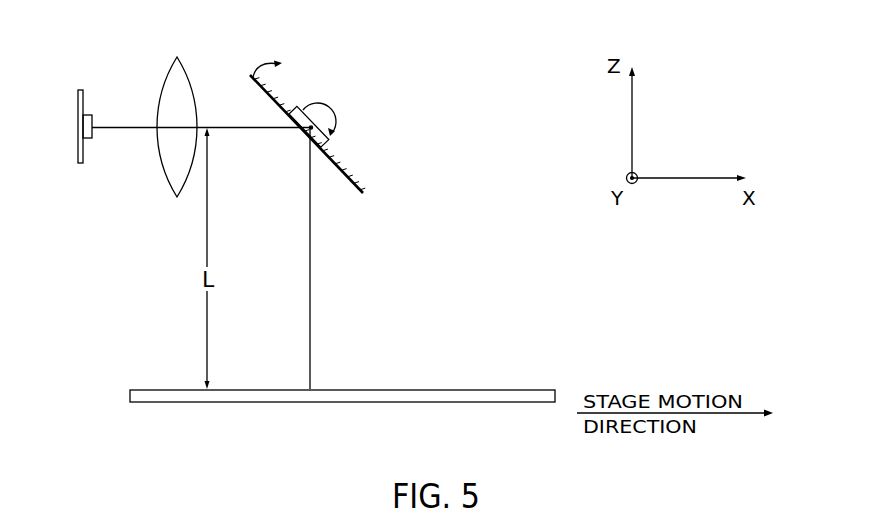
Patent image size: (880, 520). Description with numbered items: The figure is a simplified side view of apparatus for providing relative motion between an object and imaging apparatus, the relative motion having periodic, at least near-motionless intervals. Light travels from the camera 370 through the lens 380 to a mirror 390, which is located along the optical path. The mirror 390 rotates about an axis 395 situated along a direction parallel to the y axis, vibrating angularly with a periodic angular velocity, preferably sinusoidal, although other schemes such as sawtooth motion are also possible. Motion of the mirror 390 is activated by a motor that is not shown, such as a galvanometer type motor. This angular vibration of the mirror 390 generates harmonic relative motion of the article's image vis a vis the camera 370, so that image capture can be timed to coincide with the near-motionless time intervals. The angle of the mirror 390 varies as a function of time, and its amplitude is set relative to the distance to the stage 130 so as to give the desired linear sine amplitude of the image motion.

The camera 370 is at (82, 90).
The lens 380 is at (182, 87).
The mirror 390 is at (364, 193).
The axis 395 is at (298, 146).
The stage 130 is at (510, 390).